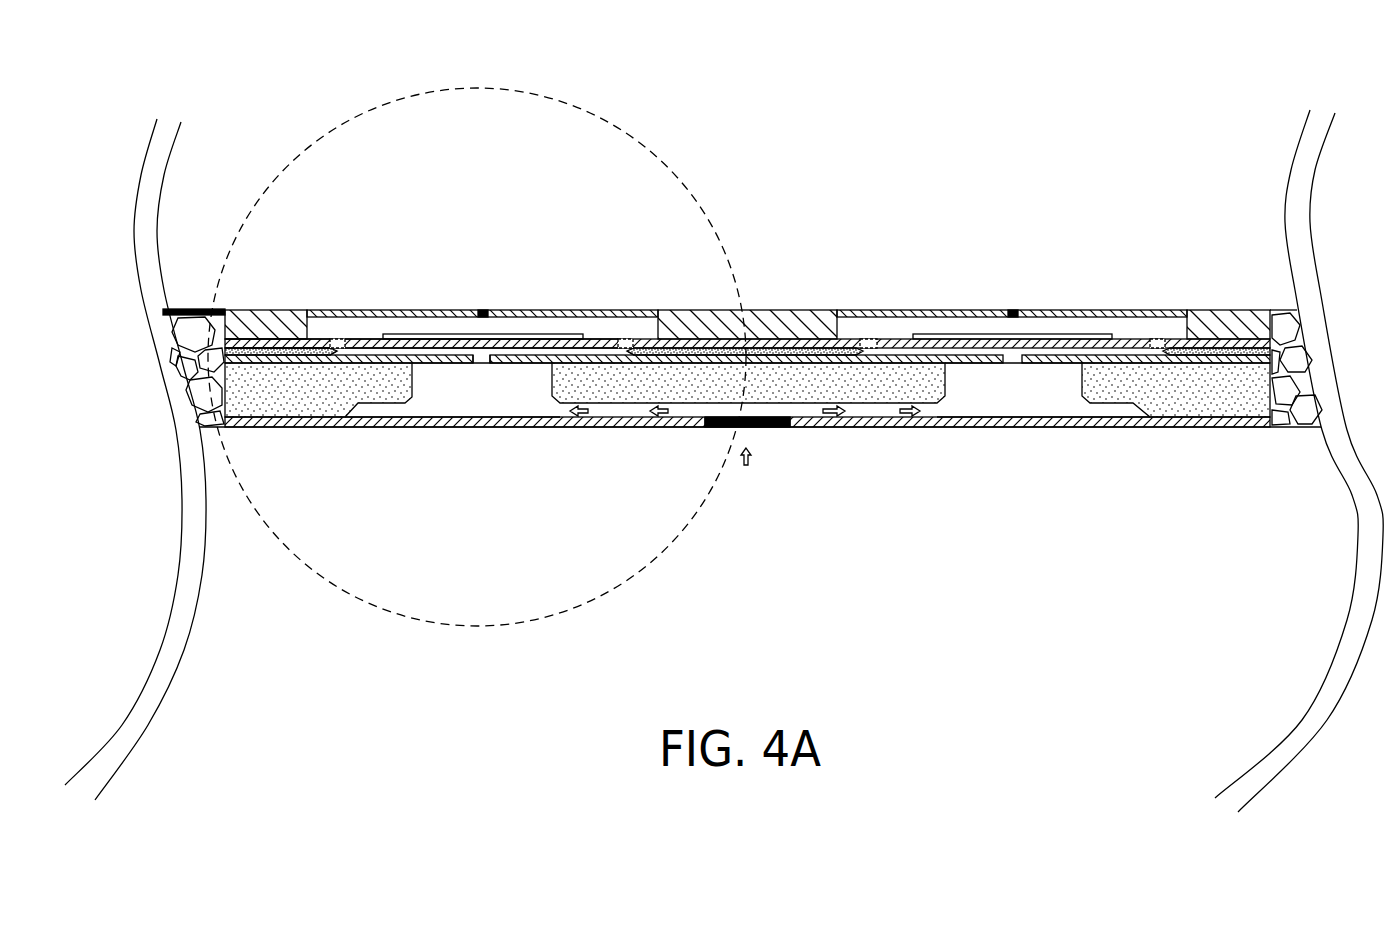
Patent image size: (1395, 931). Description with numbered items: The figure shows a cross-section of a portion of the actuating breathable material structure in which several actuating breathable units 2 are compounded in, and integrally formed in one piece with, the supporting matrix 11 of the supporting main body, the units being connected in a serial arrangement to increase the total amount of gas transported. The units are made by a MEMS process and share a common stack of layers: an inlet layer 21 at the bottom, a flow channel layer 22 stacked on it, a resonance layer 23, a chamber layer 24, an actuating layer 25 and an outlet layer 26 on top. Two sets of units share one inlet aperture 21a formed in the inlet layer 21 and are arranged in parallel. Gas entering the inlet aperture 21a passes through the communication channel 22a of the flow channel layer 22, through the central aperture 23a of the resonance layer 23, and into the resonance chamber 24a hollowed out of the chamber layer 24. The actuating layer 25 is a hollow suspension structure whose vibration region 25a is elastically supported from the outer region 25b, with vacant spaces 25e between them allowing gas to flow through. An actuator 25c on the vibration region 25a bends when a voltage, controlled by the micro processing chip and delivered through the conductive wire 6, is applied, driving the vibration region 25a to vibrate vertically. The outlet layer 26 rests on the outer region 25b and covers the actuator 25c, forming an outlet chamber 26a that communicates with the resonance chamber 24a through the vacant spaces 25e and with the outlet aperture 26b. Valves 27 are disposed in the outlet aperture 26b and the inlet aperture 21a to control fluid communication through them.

The actuating breathable unit 2 is at (682, 164).
The conductive wire 6 is at (200, 310).
The supporting matrix 11 is at (1287, 320).
The inlet layer 21 is at (300, 422).
The inlet aperture 21a is at (775, 427).
The flow channel layer 22 is at (365, 392).
The communication channel 22a is at (495, 390).
The resonance layer 23 is at (619, 363).
The central aperture 23a is at (485, 362).
The chamber layer 24 is at (1268, 350).
The resonance chamber 24a is at (542, 354).
The actuating layer 25 is at (274, 338).
The vibration region 25a is at (435, 340).
The outer region 25b is at (321, 340).
The actuator 25c is at (551, 336).
The vacant space 25e is at (339, 340).
The outlet layer 26 is at (1260, 310).
The outlet chamber 26a is at (525, 330).
The outlet aperture 26b is at (486, 309).
The valve 27 is at (480, 311).